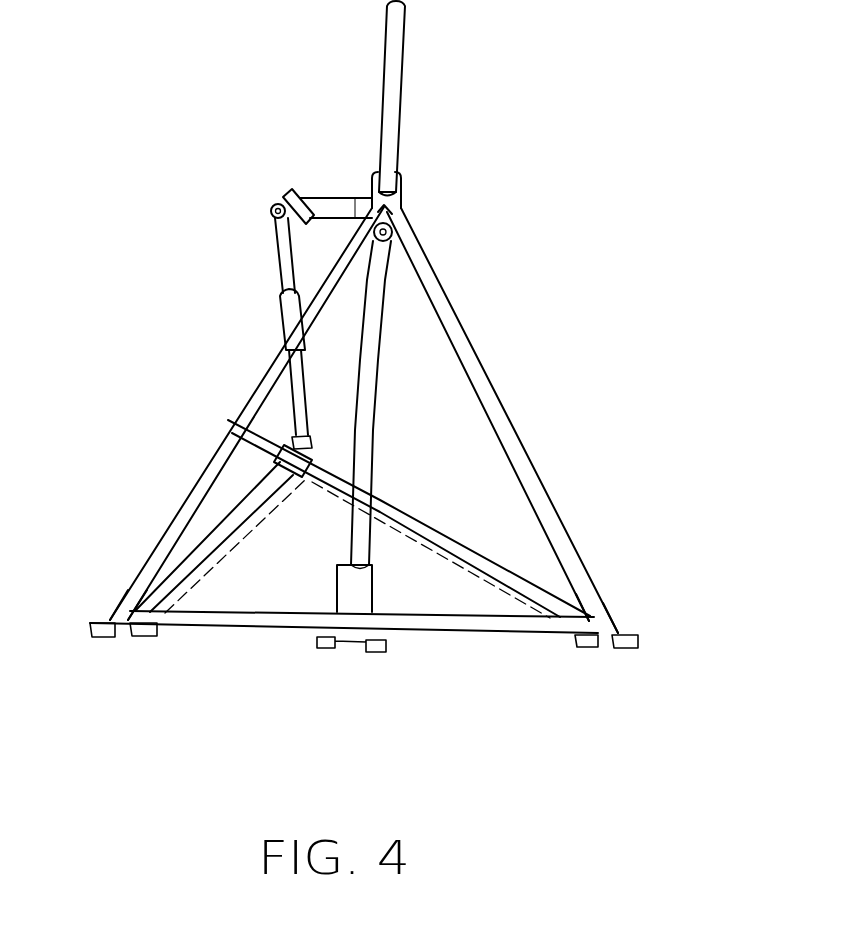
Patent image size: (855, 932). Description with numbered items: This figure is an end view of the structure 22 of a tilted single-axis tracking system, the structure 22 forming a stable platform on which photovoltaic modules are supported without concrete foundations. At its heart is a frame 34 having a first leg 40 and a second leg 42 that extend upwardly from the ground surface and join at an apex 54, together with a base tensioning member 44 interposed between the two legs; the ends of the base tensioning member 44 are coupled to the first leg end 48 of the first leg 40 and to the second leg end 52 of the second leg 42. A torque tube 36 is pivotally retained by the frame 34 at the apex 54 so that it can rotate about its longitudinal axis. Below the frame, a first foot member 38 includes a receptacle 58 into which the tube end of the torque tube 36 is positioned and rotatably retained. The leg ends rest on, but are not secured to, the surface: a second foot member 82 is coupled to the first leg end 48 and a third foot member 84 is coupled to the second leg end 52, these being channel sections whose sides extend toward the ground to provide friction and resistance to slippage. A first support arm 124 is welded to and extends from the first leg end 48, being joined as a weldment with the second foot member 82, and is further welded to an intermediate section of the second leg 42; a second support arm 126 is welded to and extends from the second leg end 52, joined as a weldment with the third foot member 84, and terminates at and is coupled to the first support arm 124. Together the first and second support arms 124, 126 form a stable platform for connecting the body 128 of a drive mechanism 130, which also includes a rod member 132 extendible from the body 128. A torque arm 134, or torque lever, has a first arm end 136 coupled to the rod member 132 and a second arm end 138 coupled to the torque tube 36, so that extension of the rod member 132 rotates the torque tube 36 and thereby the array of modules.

The structure 22 is at (736, 835).
The frame 34 is at (364, 384).
The torque tube 36 is at (403, 58).
The first foot member 38 is at (386, 652).
The first leg 40 is at (522, 440).
The second leg 42 is at (258, 388).
The base tensioning member 44 is at (252, 630).
The first leg end 48 is at (600, 597).
The second leg end 52 is at (130, 588).
The apex 54 is at (405, 180).
The receptacle 58 is at (374, 592).
The second foot member 82 is at (640, 644).
The third foot member 84 is at (90, 627).
The first support arm 124 is at (442, 534).
The second support arm 126 is at (207, 549).
The body 128 is at (305, 370).
The drive mechanism 130 is at (247, 285).
The rod member 132 is at (277, 255).
The torque arm 134 is at (322, 198).
The first arm end 136 is at (290, 200).
The second arm end 138 is at (358, 197).